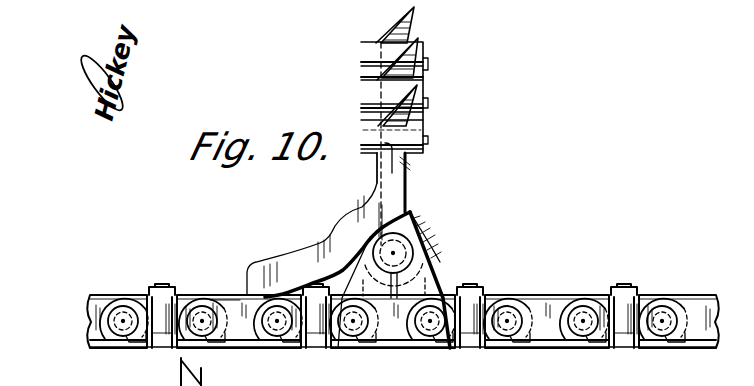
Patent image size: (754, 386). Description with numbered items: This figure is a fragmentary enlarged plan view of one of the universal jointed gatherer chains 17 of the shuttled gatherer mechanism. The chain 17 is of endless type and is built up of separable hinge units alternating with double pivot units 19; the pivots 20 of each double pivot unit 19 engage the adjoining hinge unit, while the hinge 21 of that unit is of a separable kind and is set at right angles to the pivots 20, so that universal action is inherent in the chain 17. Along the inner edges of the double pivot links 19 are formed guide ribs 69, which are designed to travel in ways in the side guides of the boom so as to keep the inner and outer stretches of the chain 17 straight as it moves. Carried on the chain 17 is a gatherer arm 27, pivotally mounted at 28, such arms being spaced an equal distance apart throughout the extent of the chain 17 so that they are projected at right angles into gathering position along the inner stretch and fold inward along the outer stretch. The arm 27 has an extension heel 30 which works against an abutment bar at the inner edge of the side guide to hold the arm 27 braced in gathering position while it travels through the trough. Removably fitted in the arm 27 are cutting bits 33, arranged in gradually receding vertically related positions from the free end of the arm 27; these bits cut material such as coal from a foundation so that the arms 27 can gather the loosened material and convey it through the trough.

The universal jointed gatherer chain 17 is at (555, 294).
The double pivot unit 19 is at (223, 293).
The pivot 20 is at (202, 322).
The hinge 21 is at (471, 287).
The gatherer arm 27 is at (405, 188).
The pivotal mounting 28 is at (382, 243).
The extension heel 30 is at (292, 265).
The cutting bit 33 is at (415, 9).
The guide rib 69 is at (695, 360).